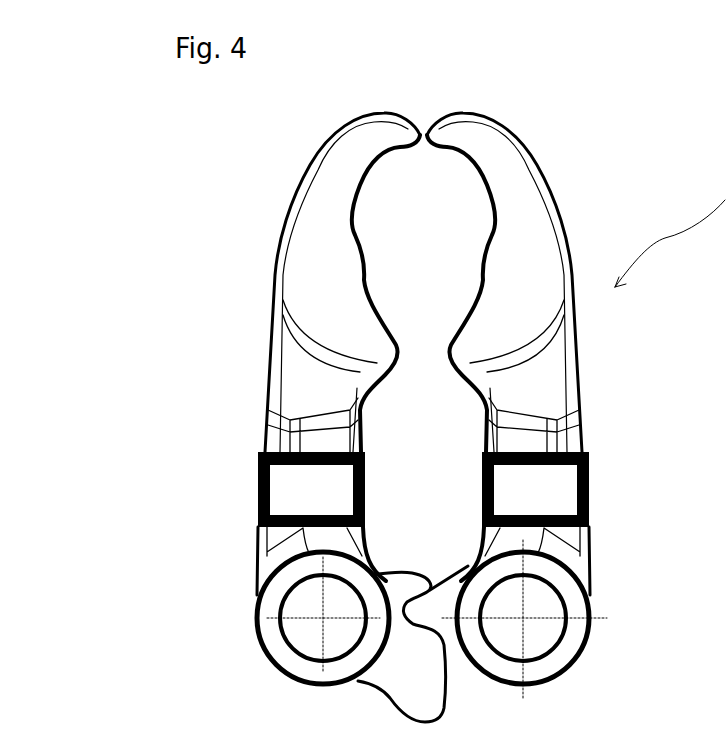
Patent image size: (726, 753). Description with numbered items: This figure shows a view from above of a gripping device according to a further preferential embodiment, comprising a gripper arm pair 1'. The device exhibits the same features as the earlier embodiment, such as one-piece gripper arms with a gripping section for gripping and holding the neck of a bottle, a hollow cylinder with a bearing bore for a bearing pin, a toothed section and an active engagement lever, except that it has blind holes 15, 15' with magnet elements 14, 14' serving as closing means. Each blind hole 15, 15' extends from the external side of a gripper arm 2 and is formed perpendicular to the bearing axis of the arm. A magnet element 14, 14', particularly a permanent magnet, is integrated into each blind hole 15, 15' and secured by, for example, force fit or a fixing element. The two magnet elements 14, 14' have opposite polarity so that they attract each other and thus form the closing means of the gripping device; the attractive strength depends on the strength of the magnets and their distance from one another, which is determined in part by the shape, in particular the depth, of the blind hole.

The gripper arm pair 1' is at (384, 362).
The gripper arm 2 is at (200, 307).
The magnet element 14 is at (271, 541).
The blind hole 15 is at (241, 477).
The magnet element 14' is at (576, 541).
The blind hole 15' is at (588, 460).